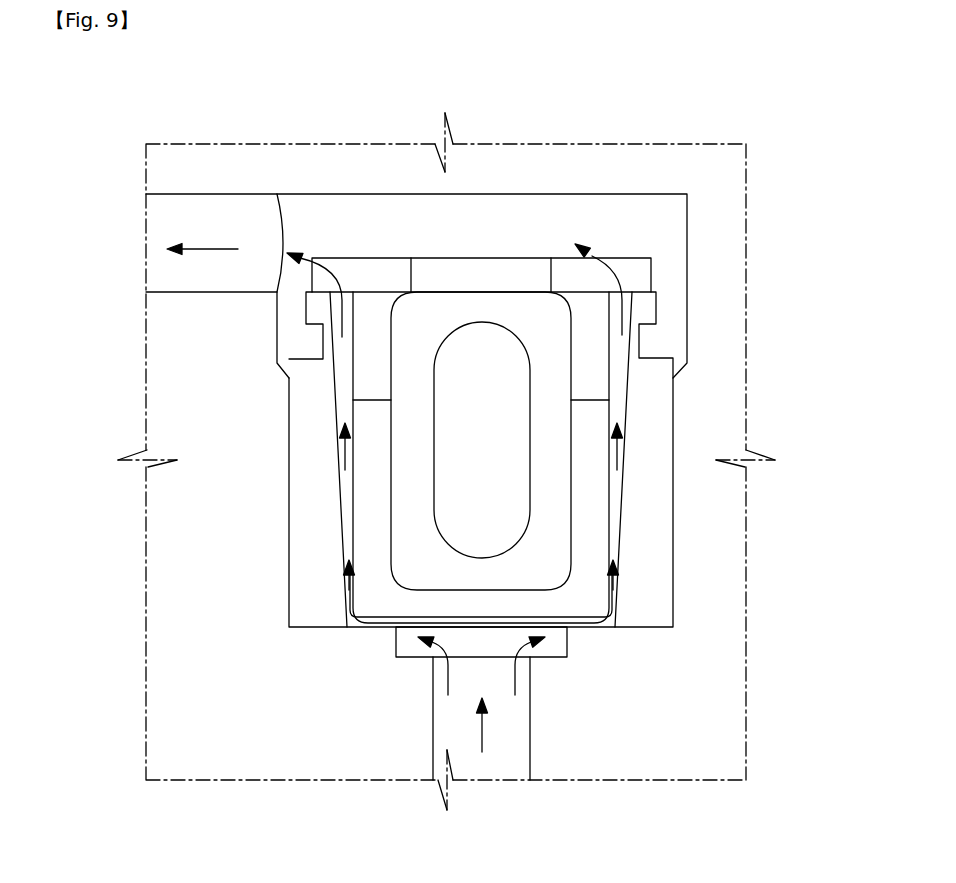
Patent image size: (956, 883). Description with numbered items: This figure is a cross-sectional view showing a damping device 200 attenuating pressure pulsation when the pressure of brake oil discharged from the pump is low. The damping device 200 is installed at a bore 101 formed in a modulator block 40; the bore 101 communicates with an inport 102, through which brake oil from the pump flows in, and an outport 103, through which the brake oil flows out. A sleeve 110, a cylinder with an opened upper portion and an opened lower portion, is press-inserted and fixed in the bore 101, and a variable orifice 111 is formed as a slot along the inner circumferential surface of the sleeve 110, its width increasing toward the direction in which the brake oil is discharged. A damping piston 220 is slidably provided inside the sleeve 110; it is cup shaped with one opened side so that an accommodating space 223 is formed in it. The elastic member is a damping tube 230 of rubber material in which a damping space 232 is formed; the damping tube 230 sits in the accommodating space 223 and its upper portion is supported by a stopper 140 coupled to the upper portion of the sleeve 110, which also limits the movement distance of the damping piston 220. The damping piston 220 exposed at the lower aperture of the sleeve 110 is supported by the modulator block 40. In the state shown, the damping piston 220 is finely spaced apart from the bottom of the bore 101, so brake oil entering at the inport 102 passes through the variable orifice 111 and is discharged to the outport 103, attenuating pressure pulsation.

The modulator block 40 is at (722, 668).
The bore 101 is at (658, 568).
The inport 102 is at (500, 758).
The outport 103 is at (172, 220).
The sleeve 110 is at (660, 425).
The variable orifice 111 is at (618, 362).
The stopper 140 is at (504, 258).
The damping device 200 is at (670, 228).
The damping piston 220 is at (365, 529).
The accommodating space 223 is at (560, 485).
The damping tube 230 is at (408, 497).
The damping space 232 is at (459, 442).